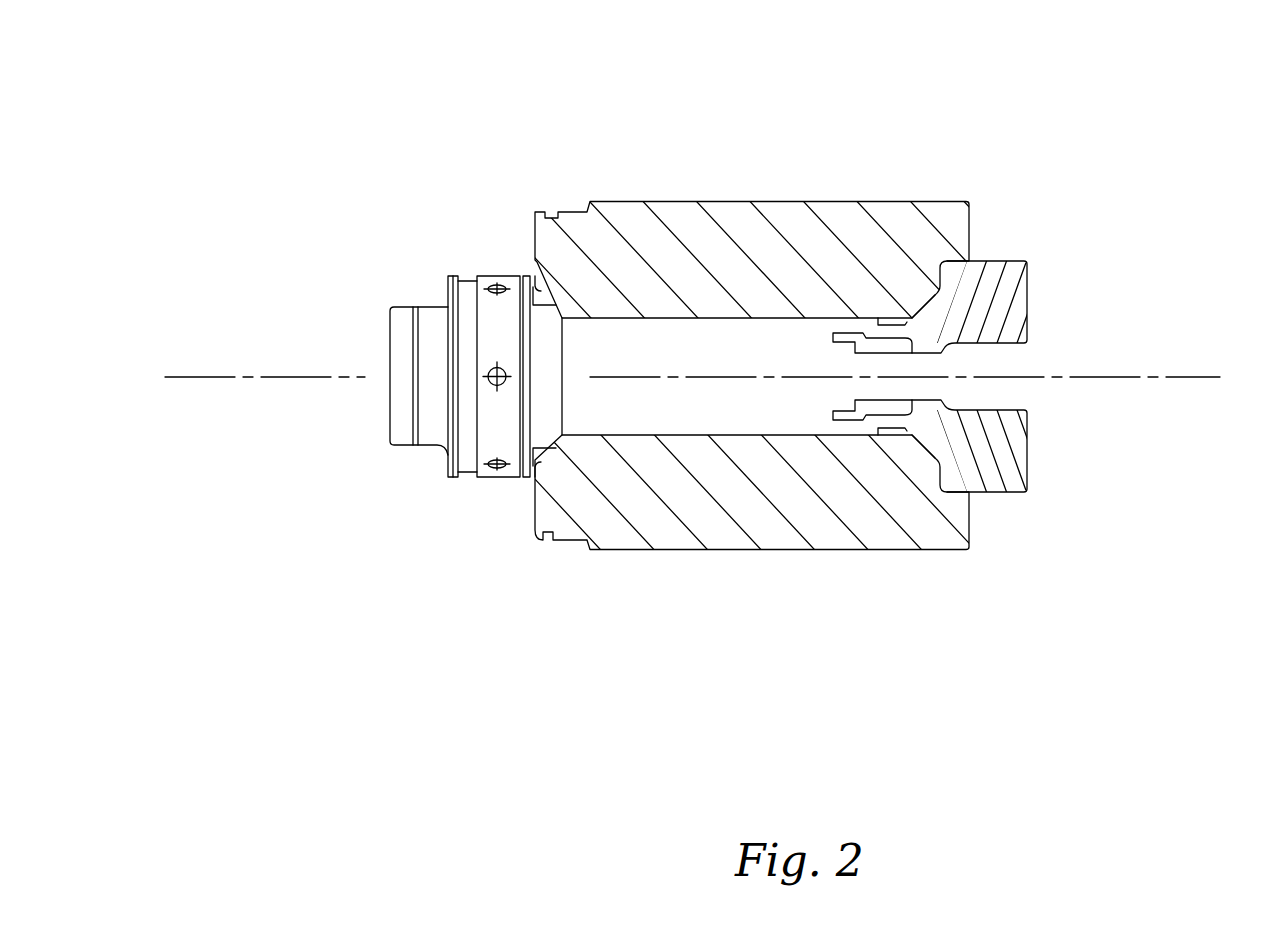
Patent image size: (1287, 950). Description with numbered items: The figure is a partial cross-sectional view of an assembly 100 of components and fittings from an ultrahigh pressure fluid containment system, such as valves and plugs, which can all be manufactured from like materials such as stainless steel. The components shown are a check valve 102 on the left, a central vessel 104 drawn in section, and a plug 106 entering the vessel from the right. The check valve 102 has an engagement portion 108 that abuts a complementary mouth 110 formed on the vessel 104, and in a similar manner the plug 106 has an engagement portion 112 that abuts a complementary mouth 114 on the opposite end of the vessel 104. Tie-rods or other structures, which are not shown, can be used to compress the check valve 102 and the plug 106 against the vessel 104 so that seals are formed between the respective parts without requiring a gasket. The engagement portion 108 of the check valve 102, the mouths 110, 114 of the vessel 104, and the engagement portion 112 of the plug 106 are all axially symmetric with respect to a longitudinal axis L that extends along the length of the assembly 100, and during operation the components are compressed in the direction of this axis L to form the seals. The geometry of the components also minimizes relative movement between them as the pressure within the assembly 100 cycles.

The assembly 100 is at (392, 86).
The check valve 102 is at (403, 445).
The vessel 104 is at (716, 550).
The plug 106 is at (1027, 450).
The engagement portion 108 is at (545, 343).
The mouth 110 is at (532, 305).
The engagement portion 112 is at (914, 291).
The mouth 114 is at (952, 302).
The longitudinal axis L is at (1138, 377).